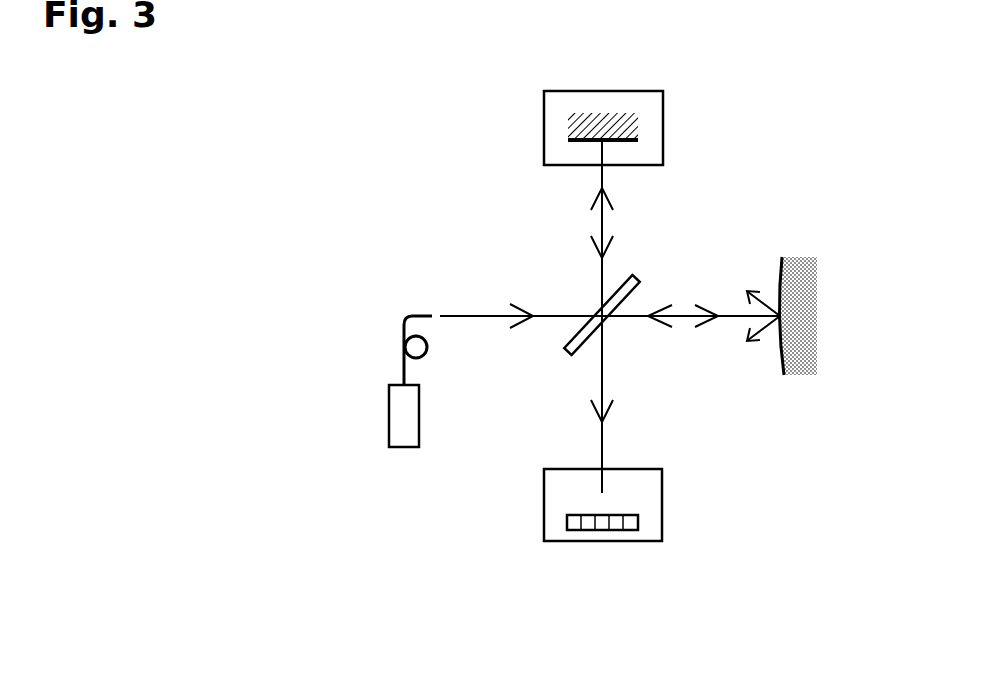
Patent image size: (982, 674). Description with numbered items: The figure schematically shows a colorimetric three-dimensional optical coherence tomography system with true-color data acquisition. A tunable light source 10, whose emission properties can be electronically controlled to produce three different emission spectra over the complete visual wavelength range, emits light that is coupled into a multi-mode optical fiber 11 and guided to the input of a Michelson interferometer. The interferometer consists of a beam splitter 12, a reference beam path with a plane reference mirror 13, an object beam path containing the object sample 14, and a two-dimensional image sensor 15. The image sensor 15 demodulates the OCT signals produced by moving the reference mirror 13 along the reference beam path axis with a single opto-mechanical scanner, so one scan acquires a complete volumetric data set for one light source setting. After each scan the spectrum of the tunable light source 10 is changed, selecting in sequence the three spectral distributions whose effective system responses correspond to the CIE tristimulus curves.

The tunable light source 10 is at (380, 416).
The multi-mode optical fiber 11 is at (410, 330).
The beam splitter 12 is at (596, 315).
The plane reference mirror 13 is at (637, 128).
The object sample 14 is at (825, 316).
The two-dimensional image sensor 15 is at (637, 505).